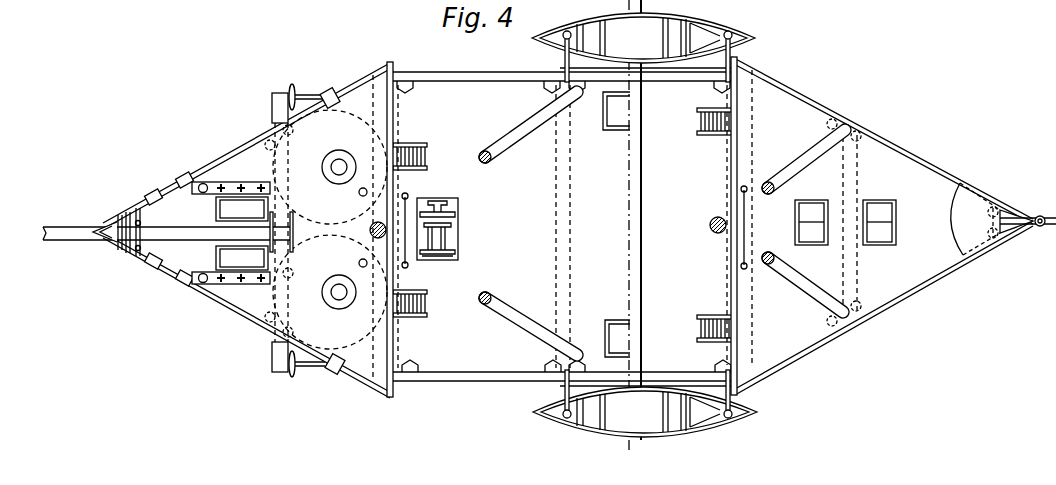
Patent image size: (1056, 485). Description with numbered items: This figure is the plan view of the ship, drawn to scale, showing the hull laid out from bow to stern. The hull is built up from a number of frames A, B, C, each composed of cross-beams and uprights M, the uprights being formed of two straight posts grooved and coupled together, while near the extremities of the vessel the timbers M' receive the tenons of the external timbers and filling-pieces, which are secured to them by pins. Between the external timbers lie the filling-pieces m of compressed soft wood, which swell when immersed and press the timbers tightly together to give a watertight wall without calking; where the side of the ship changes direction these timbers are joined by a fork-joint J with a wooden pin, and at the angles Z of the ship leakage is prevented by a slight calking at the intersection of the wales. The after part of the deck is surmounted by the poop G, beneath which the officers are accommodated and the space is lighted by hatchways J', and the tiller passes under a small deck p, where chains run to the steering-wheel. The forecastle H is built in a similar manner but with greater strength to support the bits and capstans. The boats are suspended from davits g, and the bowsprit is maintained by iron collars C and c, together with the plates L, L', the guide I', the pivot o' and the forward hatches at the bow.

The frame A is at (576, 227).
The angles of the ship Z is at (564, 221).
The davits g is at (638, 224).
The central guide lines I' is at (563, 226).
The frame B is at (566, 232).
The timbers M' is at (330, 229).
The forecastle H is at (339, 229).
The uprights M is at (670, 225).
The forward hatches J' is at (242, 233).
The fork-joint J is at (845, 222).
The poop G is at (762, 227).
The plate L is at (274, 232).
The plate L' is at (296, 232).
The pivot o' is at (285, 267).
The frame C is at (126, 226).
The small deck p is at (957, 219).
The stern brackets c is at (980, 219).
The filling-pieces m is at (1028, 216).